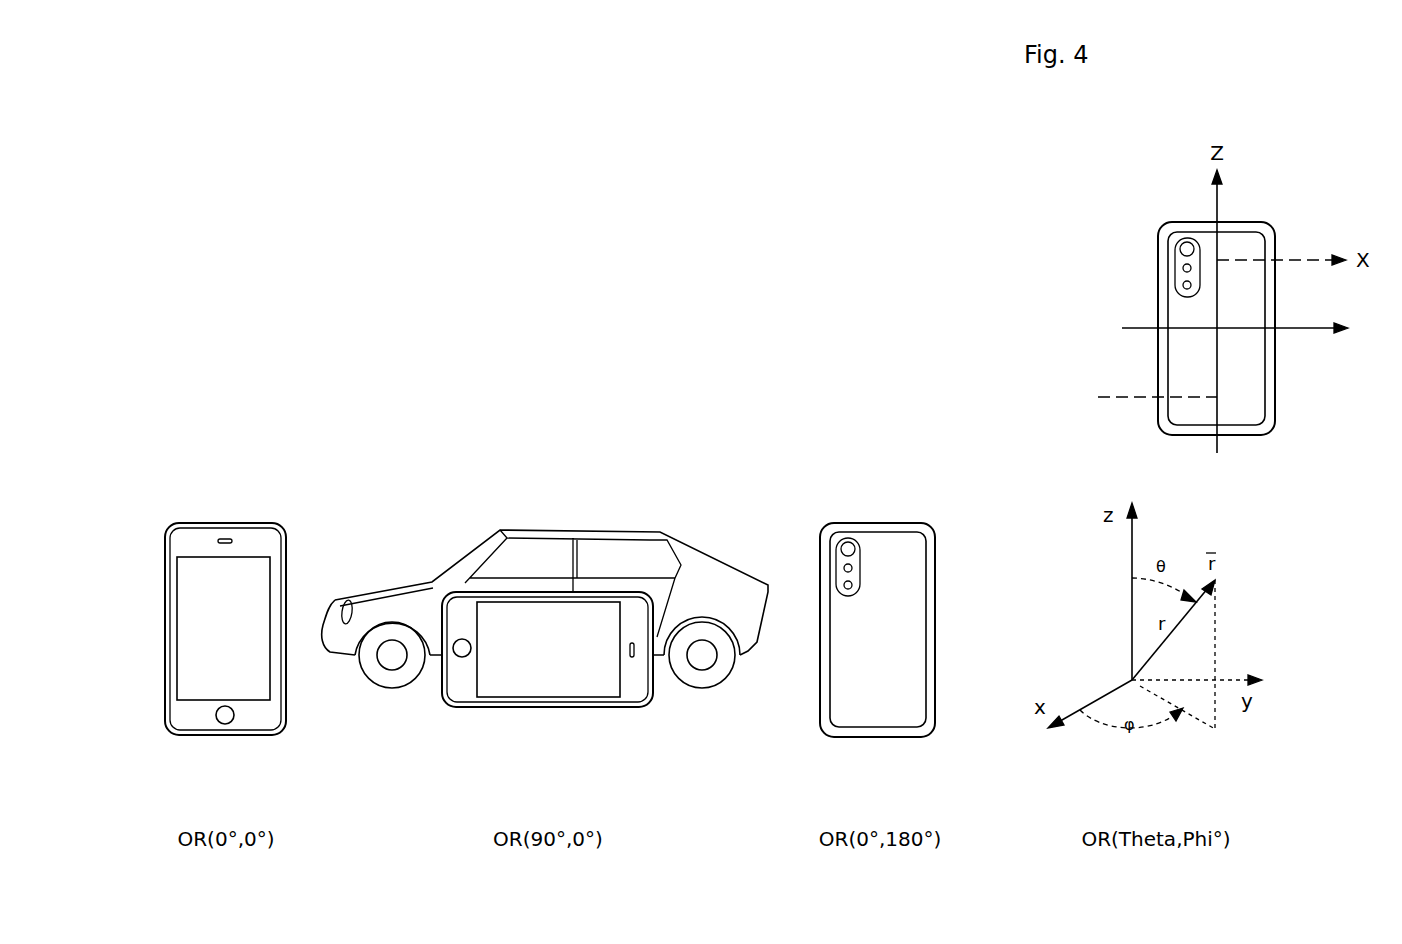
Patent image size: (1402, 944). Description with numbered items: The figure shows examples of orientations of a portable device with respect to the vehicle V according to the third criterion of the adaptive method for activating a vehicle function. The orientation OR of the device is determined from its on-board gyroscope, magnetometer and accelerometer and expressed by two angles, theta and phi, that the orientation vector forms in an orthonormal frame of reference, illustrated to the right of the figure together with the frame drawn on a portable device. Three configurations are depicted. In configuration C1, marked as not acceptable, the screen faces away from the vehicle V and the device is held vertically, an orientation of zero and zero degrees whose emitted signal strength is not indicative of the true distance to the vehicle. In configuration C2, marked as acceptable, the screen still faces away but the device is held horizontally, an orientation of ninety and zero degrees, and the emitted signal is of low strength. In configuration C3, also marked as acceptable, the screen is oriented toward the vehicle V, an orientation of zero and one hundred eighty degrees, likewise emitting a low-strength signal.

The vehicle V is at (597, 555).
The configuration C1 is at (225, 630).
The configuration C2 is at (547, 688).
The configuration C3 is at (877, 631).